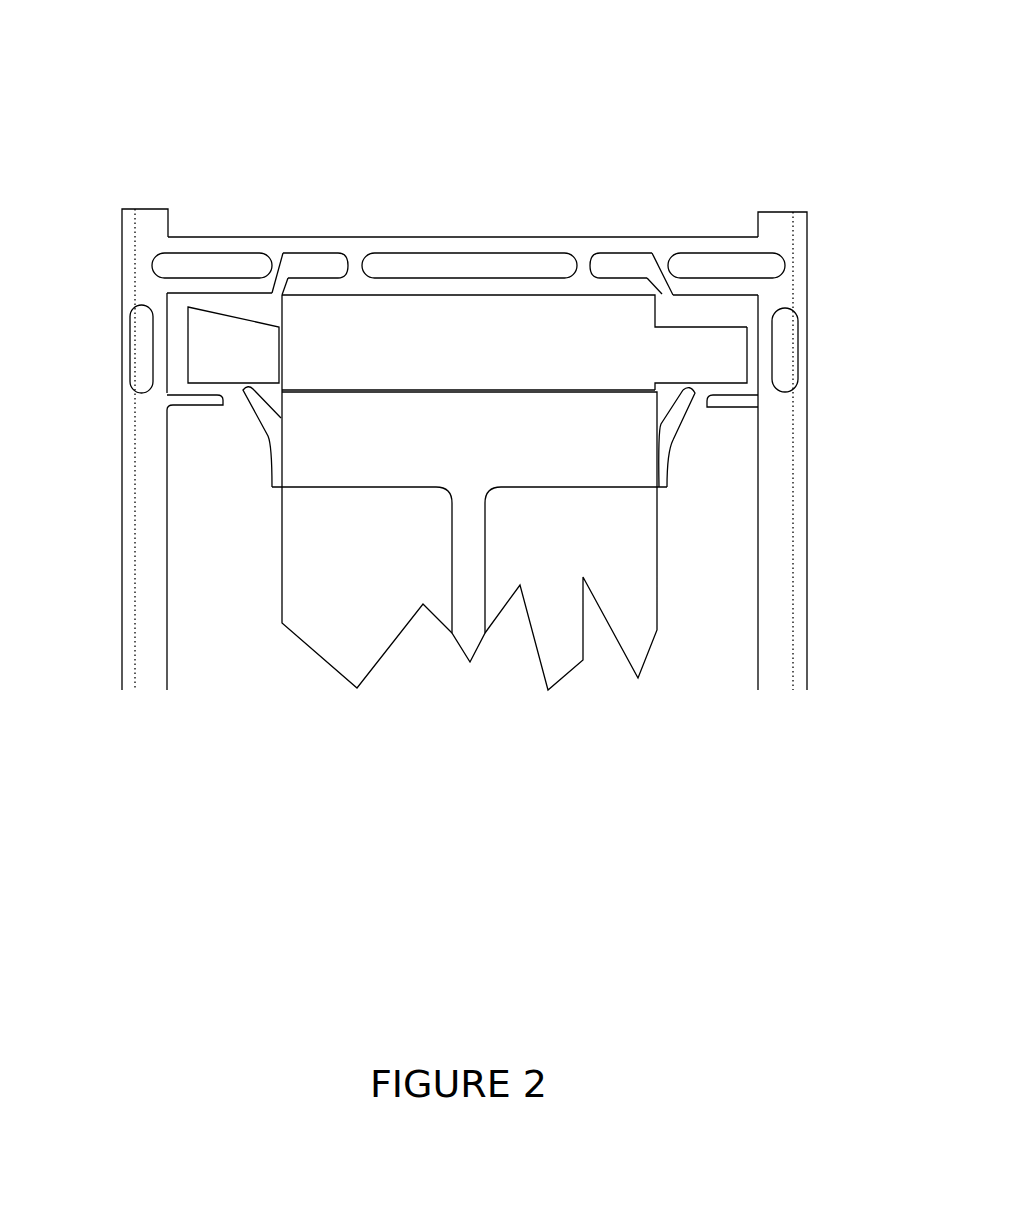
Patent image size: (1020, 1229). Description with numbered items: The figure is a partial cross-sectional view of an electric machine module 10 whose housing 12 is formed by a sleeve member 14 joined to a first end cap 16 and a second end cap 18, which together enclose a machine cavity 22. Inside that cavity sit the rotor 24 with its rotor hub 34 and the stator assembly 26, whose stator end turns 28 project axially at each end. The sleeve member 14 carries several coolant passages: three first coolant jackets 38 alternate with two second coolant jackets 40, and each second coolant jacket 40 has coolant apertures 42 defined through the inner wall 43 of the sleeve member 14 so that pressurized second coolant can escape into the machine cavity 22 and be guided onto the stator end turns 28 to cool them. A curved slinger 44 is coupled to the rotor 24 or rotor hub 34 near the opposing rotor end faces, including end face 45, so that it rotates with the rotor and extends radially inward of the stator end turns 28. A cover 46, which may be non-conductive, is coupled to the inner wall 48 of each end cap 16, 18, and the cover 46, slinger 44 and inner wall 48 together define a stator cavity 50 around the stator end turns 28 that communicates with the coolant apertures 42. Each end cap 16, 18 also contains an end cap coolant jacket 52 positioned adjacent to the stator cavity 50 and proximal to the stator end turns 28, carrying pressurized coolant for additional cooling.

The electric machine module 10 is at (688, 63).
The housing 12 is at (190, 200).
The sleeve member 14 is at (317, 237).
The first end cap 16 is at (122, 228).
The second end cap 18 is at (803, 224).
The machine cavity 22 is at (250, 588).
The rotor 24 is at (352, 477).
The stator assembly 26 is at (505, 325).
The stator end turns 28 is at (200, 327).
The rotor hub 34 is at (450, 545).
The first coolant jacket 38 is at (215, 255).
The second coolant jacket 40 is at (293, 259).
The coolant apertures 42 is at (275, 284).
The inner wall of the sleeve member 43 is at (264, 452).
The slinger 44 is at (257, 408).
The end face 45 is at (670, 465).
The cover 46 is at (197, 402).
The inner wall 48 is at (170, 375).
The stator cavity 50 is at (730, 308).
The end cap coolant jacket 52 is at (138, 345).